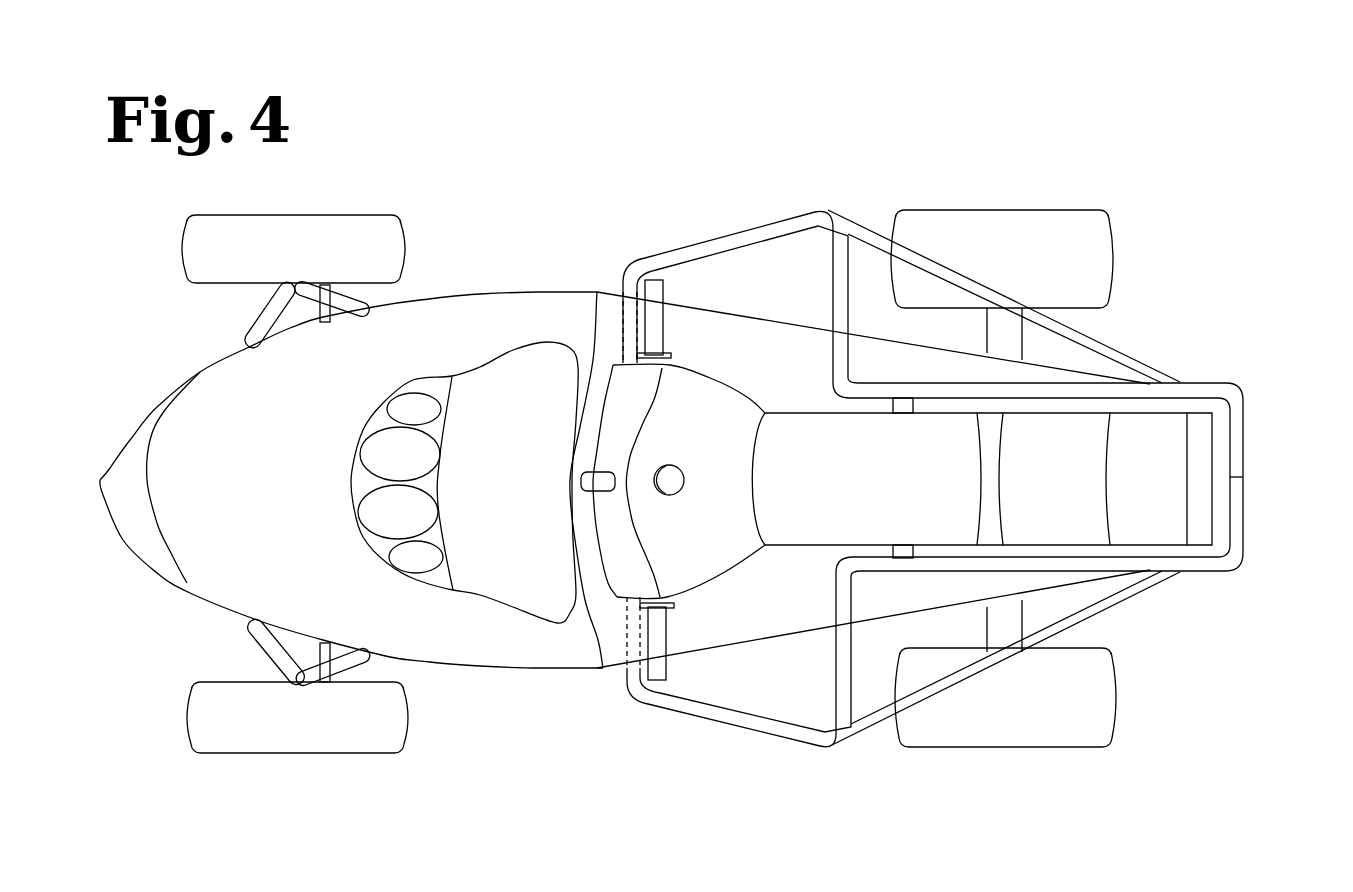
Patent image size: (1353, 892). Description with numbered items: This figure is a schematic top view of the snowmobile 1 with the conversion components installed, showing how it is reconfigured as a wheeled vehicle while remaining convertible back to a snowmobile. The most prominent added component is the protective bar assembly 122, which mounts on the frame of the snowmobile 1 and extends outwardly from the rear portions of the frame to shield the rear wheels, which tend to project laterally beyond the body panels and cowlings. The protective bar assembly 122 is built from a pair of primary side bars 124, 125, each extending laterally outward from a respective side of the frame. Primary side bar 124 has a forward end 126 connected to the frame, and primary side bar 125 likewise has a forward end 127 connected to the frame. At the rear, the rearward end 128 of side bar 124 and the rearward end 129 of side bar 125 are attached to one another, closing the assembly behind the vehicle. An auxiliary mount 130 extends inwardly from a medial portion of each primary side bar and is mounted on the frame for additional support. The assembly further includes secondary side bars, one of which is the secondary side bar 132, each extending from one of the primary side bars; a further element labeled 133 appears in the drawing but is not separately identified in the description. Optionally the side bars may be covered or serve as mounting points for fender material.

The snowmobile 1 is at (217, 412).
The protective bar assembly 122 is at (702, 233).
The primary side bar 124 is at (725, 716).
The primary side bar 125 is at (755, 234).
The forward end 126 is at (627, 628).
The forward end 127 is at (622, 328).
The rearward end 128 is at (1236, 494).
The rearward end 129 is at (1236, 444).
The auxiliary mount 130 is at (907, 552).
The secondary side bar 132 is at (938, 685).
The upper diagonal brace 133 is at (1100, 352).